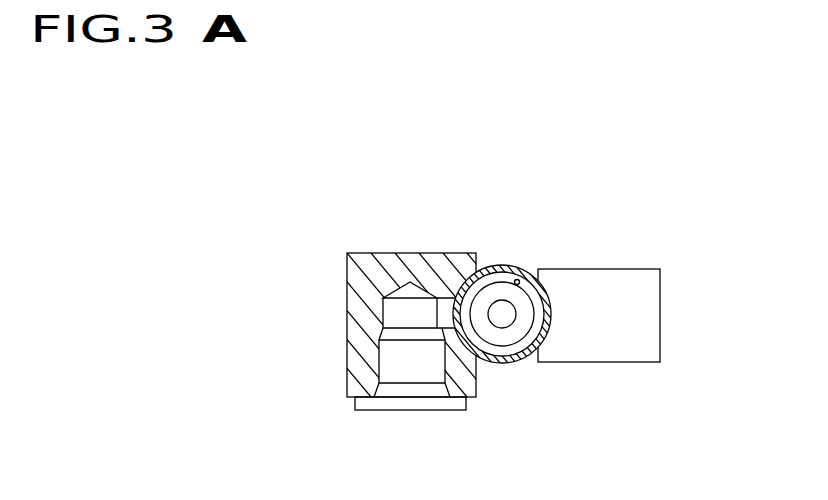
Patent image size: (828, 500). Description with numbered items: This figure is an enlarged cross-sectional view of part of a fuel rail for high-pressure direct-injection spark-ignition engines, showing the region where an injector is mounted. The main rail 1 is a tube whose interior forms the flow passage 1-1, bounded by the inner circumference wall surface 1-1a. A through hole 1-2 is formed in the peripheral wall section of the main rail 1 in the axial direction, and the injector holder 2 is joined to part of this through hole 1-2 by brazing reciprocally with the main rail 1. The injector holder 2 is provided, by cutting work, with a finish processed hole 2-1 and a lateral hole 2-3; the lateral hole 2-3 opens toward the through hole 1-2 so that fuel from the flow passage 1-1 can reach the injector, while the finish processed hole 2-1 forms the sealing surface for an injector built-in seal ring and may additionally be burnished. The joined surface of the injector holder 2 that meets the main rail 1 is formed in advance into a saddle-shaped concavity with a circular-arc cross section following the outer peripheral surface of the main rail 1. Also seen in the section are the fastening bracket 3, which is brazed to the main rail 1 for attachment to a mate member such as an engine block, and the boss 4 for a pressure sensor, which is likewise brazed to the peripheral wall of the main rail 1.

The main rail 1 is at (528, 360).
The flow passage 1-1 is at (500, 345).
The inner circumference wall surface 1-1a is at (522, 276).
The through hole 1-2 is at (455, 300).
The injector holder 2 is at (364, 262).
The finish processed hole 2-1 is at (380, 371).
The lateral hole 2-3 is at (440, 300).
The fastening bracket 3 is at (367, 405).
The boss for a pressure sensor 4 is at (651, 291).